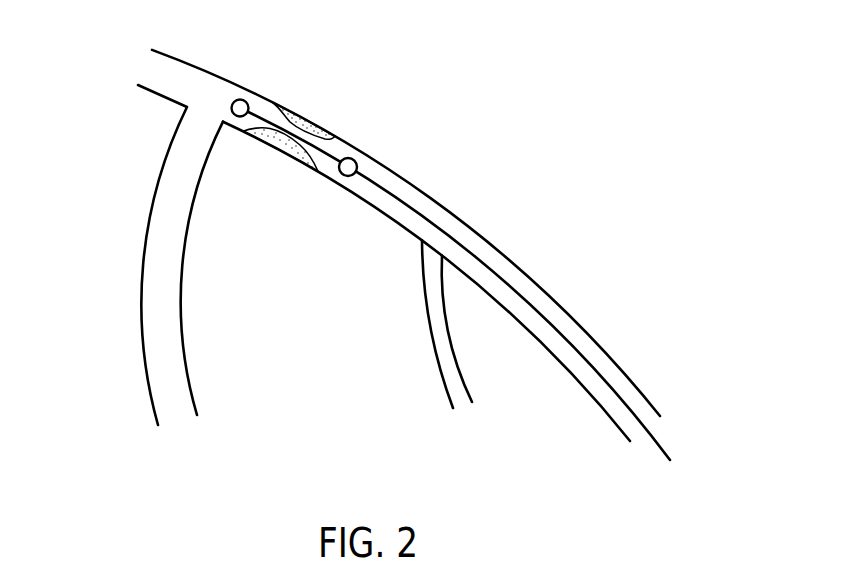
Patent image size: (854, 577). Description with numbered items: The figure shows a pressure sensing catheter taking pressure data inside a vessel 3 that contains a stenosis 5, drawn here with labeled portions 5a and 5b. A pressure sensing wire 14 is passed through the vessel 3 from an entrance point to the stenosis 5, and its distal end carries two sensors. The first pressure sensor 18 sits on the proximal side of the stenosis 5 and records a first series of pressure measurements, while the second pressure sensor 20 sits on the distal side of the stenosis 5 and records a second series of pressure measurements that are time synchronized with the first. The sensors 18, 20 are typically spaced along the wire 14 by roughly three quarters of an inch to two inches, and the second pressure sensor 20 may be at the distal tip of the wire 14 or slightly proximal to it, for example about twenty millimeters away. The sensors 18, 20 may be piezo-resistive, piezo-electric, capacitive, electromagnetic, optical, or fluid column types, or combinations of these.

The vessel 3 is at (450, 212).
The pressure sensing wire 14 is at (663, 448).
The stenosis 5 is at (336, 101).
The first weight portion 5a is at (353, 124).
The second weight portion 5b is at (276, 80).
The first pressure sensor 18 is at (355, 160).
The second pressure sensor 20 is at (241, 99).